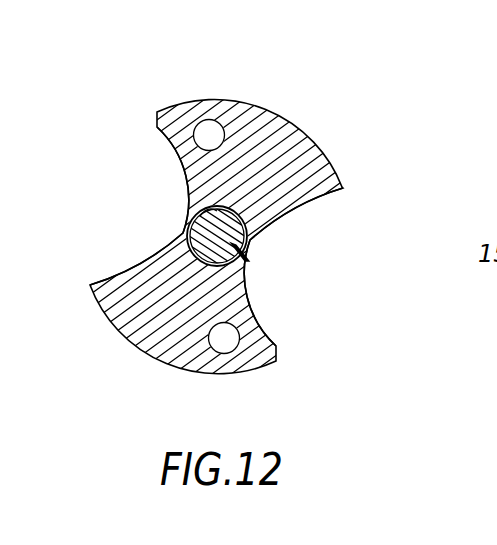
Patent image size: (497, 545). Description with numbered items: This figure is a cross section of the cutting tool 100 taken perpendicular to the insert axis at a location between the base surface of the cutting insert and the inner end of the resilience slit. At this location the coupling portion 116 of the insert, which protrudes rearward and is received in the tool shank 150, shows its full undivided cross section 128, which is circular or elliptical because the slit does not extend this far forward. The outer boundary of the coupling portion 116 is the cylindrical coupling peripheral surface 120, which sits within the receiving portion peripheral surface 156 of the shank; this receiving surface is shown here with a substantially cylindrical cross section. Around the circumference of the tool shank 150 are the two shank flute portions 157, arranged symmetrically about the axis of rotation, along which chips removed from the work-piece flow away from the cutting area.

The cutting tool 100 is at (248, 272).
The tool shank 150 is at (328, 96).
The shank flute portions 157 is at (187, 176).
The coupling peripheral surface 120 is at (247, 222).
The full undivided cross section 128 is at (181, 234).
The receiving portion peripheral surface 156 is at (188, 218).
The coupling portion 116 is at (248, 259).